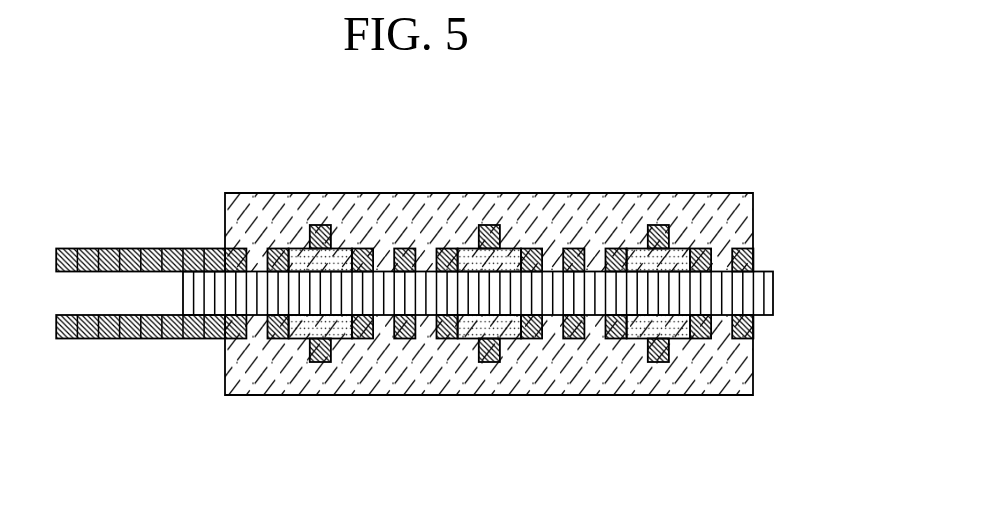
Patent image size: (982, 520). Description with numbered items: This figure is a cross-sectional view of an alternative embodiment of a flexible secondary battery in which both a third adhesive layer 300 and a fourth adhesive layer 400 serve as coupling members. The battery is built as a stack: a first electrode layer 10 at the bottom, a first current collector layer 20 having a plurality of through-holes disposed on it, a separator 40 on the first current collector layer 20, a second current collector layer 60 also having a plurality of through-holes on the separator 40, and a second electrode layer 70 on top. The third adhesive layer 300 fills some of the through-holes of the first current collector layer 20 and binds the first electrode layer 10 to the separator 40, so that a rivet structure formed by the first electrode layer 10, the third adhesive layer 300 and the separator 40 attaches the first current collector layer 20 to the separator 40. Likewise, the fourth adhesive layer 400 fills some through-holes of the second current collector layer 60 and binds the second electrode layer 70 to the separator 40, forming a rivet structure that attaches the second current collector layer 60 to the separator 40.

The first electrode layer 10 is at (753, 360).
The first current collector layer 20 is at (753, 327).
The separator 40 is at (774, 293).
The second current collector layer 60 is at (753, 259).
The second electrode layer 70 is at (753, 222).
The third adhesive layer 300 is at (468, 332).
The fourth adhesive layer 400 is at (468, 258).